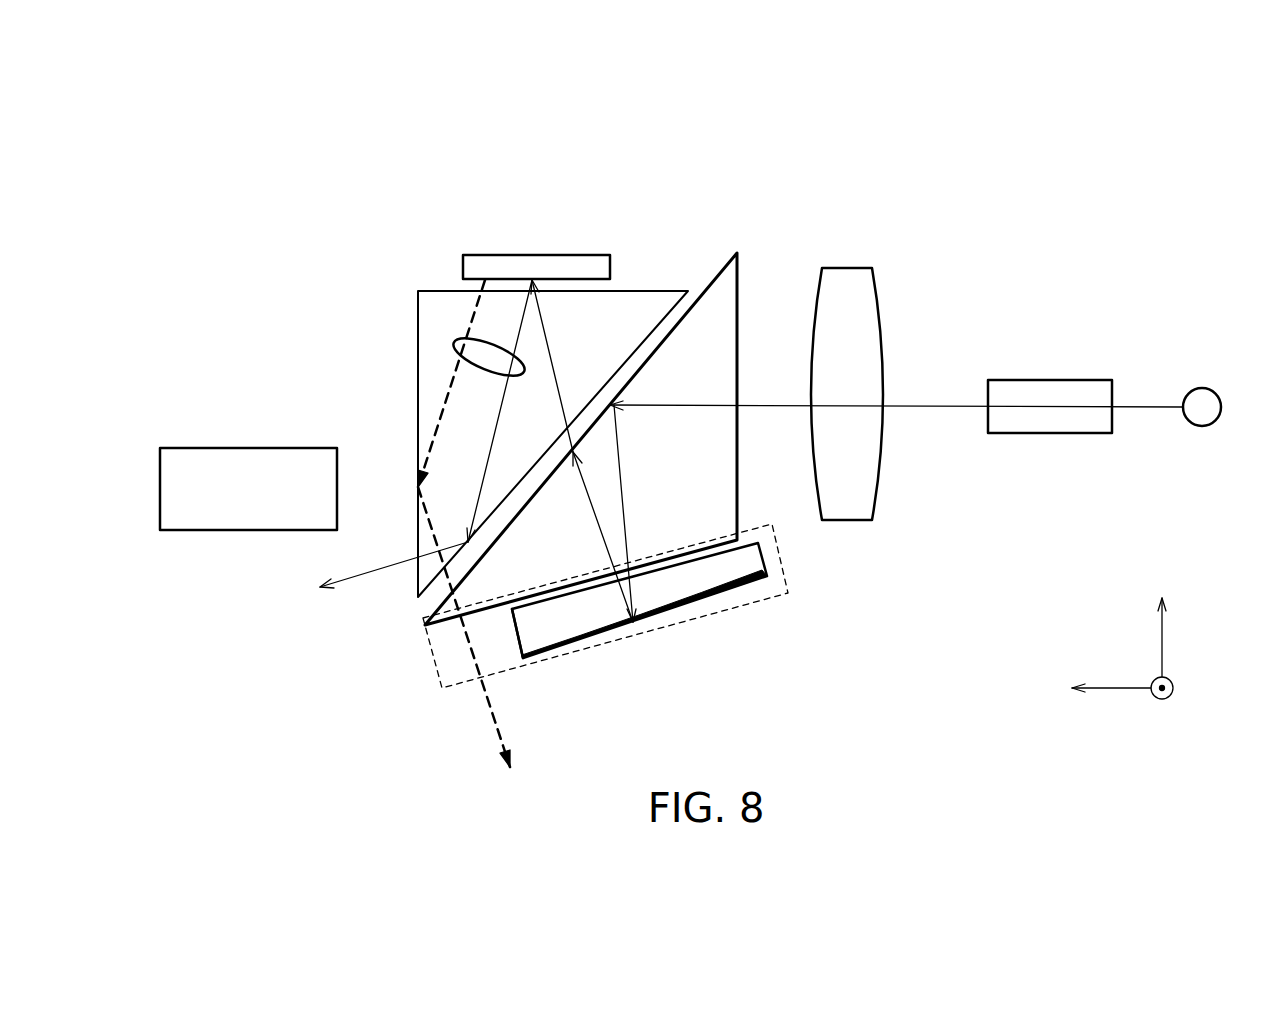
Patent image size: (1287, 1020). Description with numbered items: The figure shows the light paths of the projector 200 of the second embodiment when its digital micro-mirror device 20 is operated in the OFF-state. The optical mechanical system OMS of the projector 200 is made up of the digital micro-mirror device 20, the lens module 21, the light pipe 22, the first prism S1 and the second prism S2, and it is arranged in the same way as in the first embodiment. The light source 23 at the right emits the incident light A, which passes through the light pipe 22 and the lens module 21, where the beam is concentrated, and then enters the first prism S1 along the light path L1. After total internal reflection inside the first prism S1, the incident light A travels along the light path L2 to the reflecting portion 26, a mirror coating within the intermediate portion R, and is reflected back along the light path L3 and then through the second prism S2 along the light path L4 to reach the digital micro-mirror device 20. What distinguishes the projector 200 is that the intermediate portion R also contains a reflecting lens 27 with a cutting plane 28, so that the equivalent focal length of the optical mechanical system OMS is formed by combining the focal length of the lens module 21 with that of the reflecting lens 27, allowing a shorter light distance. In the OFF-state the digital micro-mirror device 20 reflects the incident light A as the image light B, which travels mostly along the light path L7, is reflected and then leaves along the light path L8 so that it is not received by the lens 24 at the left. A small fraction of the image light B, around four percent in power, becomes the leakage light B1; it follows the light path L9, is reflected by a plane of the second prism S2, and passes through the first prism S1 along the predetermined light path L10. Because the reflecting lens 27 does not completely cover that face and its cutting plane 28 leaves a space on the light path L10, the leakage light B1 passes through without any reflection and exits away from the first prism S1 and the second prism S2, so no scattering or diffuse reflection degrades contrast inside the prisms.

The projector 200 is at (283, 168).
The digital micro-mirror device 20 is at (537, 255).
The lens module 21 is at (848, 268).
The light pipe 22 is at (1052, 380).
The light source 23 is at (1202, 388).
The lens 24 is at (234, 503).
The reflecting portion 26 is at (727, 600).
The reflecting lens 27 is at (663, 598).
The cutting plane 28 is at (514, 636).
The optical mechanical system OMS is at (1103, 172).
The first prism S1 is at (738, 492).
The second prism S2 is at (418, 336).
The incident light A is at (940, 407).
The image light B is at (453, 353).
The leakage light B1 is at (493, 721).
The intermediate portion R is at (433, 660).
The light path L1 is at (896, 390).
The light path L2 is at (634, 513).
The light path L3 is at (598, 537).
The light path L4 is at (560, 366).
The light path L7 is at (499, 411).
The light path L8 is at (394, 565).
The light path L9 is at (451, 383).
The predetermined light path L10 is at (464, 627).